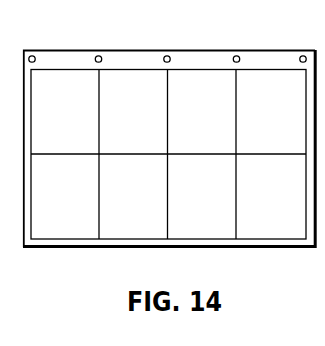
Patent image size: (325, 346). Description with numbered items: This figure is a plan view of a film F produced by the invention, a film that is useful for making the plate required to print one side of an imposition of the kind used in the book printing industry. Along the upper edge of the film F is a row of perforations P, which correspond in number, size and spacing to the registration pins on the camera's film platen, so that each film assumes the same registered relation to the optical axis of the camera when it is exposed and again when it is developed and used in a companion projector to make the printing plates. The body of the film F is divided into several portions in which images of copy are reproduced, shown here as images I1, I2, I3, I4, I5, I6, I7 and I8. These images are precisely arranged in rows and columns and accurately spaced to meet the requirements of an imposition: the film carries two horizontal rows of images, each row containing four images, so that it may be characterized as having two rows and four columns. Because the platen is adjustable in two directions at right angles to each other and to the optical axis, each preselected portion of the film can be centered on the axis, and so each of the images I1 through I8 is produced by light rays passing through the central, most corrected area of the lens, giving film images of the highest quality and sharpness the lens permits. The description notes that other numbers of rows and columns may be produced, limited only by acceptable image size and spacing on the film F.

The film F is at (278, 53).
The perforations P is at (101, 56).
The image I1 is at (271, 107).
The image I2 is at (201, 107).
The image I3 is at (134, 107).
The image I4 is at (66, 107).
The image I5 is at (65, 195).
The image I6 is at (133, 195).
The image I7 is at (201, 195).
The image I8 is at (271, 195).